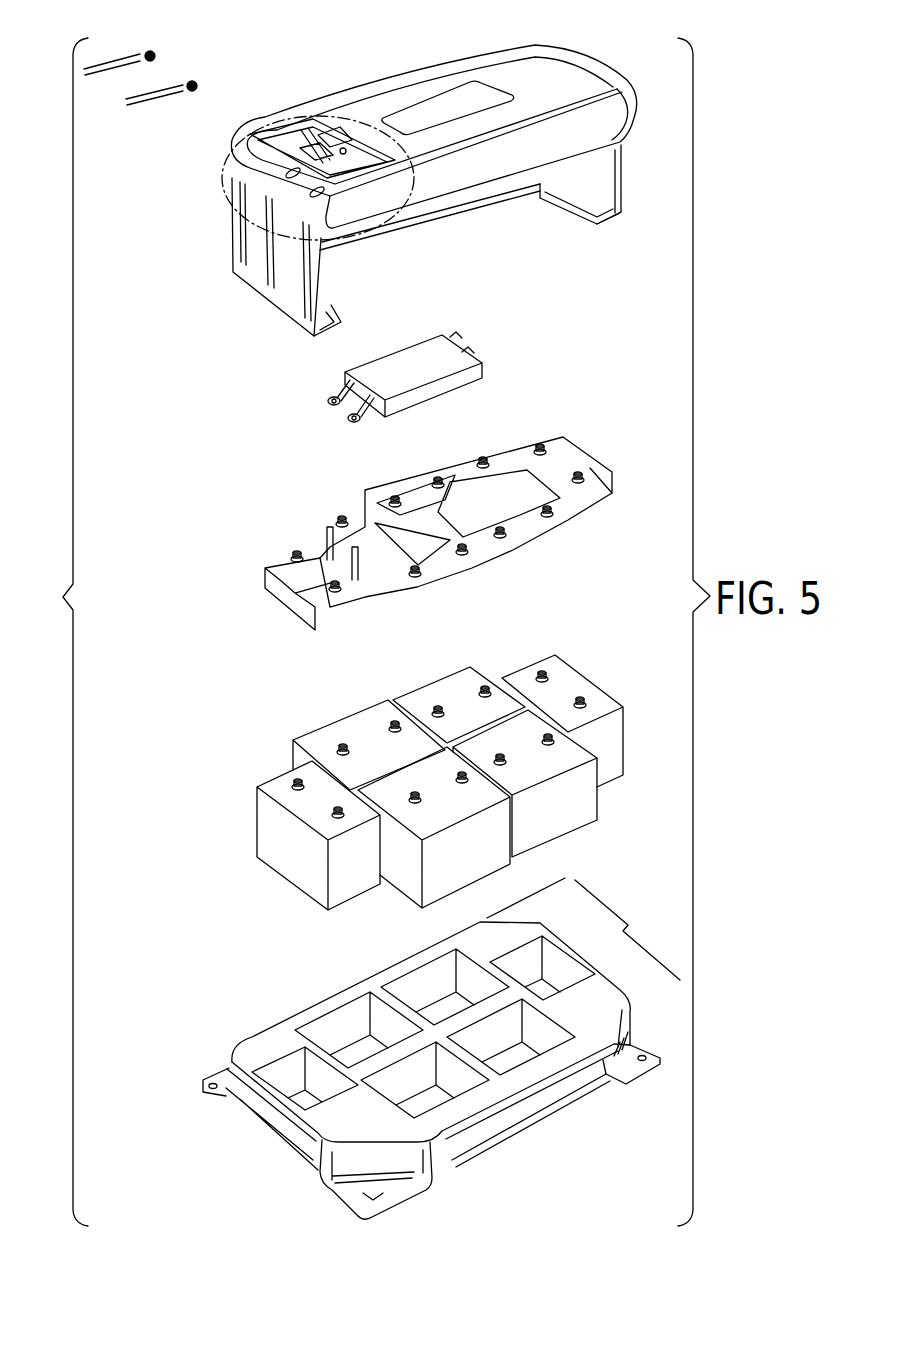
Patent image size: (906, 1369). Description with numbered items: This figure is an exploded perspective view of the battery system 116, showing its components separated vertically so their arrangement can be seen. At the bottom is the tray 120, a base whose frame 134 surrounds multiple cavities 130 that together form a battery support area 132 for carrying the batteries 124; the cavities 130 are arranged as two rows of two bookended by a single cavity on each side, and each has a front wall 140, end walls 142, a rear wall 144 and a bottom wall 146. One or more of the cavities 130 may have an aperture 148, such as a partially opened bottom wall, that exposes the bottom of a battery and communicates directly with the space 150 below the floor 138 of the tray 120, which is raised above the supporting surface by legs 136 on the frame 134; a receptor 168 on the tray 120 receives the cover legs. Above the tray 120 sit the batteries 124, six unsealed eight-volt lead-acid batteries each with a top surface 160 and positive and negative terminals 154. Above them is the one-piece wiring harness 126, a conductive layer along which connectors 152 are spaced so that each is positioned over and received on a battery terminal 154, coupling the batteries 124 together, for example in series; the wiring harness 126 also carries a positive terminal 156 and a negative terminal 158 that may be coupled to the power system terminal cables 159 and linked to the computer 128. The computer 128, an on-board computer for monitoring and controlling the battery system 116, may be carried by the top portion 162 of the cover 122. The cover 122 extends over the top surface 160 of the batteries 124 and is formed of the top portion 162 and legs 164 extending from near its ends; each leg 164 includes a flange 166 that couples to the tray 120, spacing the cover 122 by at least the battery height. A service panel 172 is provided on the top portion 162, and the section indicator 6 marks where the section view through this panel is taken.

The section line 6- 6 is at (325, 92).
The battery system 116 is at (366, 632).
The tray 120 is at (398, 1068).
The cover 122 is at (388, 176).
The batteries 124 is at (389, 755).
The wiring harness 126 is at (390, 514).
The computer 128 is at (268, 430).
The cavities 130 is at (410, 1083).
The battery support area 132 is at (583, 929).
The frame 134 is at (530, 1113).
The legs 136 is at (214, 1076).
The floor 138 is at (555, 1107).
The front wall 140 is at (453, 1065).
The end walls 142 is at (457, 1070).
The rear wall 144 is at (273, 1133).
The bottom wall 146 is at (423, 993).
The aperture 148 is at (512, 1062).
The space 150 is at (618, 1186).
The connectors 152 is at (438, 480).
The terminals 154 is at (484, 688).
The positive terminal 156 is at (330, 522).
The negative terminal 158 is at (362, 553).
The power system terminal cables 159 is at (114, 62).
The top surface 160 is at (362, 730).
The top portion 162 is at (367, 87).
The legs 164 is at (253, 243).
The flange 166 is at (328, 313).
The receptor 168 is at (272, 1137).
The service panel 172 is at (296, 140).